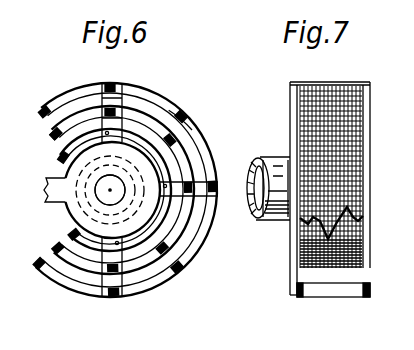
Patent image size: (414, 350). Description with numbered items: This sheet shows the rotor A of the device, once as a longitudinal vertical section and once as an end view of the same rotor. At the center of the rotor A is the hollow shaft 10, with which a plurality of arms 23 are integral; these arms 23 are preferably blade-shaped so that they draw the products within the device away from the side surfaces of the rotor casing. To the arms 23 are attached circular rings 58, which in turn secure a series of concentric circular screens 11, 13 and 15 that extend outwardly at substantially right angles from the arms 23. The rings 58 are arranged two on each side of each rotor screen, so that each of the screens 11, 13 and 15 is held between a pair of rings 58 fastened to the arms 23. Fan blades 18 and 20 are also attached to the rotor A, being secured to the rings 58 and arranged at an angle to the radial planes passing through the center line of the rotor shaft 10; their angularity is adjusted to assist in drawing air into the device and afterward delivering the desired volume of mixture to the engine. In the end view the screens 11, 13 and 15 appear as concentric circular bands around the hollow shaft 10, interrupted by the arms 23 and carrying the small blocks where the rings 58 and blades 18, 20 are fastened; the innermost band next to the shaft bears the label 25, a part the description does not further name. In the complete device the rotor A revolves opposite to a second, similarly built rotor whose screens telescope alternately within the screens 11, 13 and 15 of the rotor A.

In FIG. 6, the hollow shaft 10 is at (138, 194).
In FIG. 7, the hollow shaft 10 is at (283, 157).
In FIG. 6, the circular screen 11 is at (62, 151).
In FIG. 6, the circular screen 13 is at (50, 126).
In FIG. 7, the circular screen 13 is at (357, 245).
In FIG. 7, the circular screen 15 is at (353, 139).
In FIG. 6, the fan blade 18 is at (122, 115).
In FIG. 6, the fan blade 20 is at (117, 89).
In FIG. 7, the fan blade 20 is at (362, 297).
In FIG. 6, the arm 23 is at (50, 176).
In FIG. 7, the arm 23 is at (292, 260).
In FIG. 6, the inner ring 25 is at (120, 286).
In FIG. 6, the circular ring 58 is at (155, 280).
In FIG. 7, the rotor A is at (283, 247).